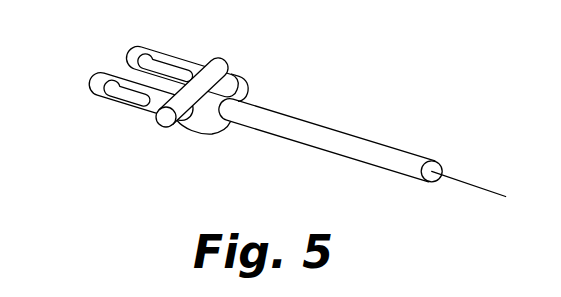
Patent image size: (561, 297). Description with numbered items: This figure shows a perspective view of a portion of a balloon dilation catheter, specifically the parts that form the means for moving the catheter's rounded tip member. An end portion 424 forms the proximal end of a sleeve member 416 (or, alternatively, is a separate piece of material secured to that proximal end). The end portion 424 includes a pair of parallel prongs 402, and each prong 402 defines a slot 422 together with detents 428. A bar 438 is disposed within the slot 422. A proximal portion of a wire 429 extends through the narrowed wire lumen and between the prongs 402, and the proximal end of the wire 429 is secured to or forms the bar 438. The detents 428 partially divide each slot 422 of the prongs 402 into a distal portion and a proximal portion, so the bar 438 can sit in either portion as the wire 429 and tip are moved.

The prong 402 is at (97, 80).
The detents 428 is at (123, 104).
The slot 422 is at (147, 100).
The end portion 424 is at (256, 82).
The bar 438 is at (165, 127).
The sleeve member 416 is at (343, 136).
The wire 429 is at (477, 188).